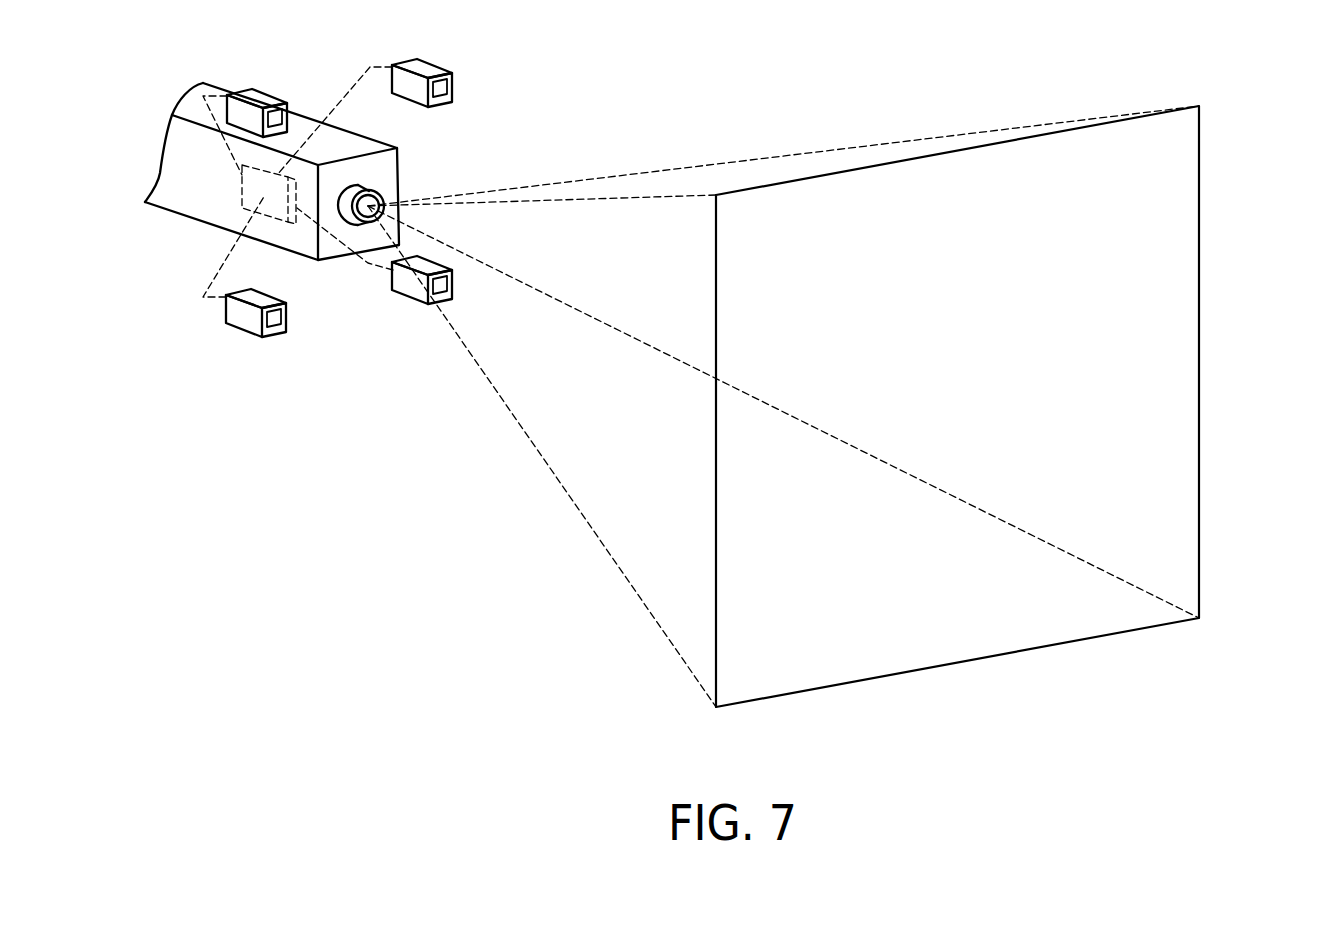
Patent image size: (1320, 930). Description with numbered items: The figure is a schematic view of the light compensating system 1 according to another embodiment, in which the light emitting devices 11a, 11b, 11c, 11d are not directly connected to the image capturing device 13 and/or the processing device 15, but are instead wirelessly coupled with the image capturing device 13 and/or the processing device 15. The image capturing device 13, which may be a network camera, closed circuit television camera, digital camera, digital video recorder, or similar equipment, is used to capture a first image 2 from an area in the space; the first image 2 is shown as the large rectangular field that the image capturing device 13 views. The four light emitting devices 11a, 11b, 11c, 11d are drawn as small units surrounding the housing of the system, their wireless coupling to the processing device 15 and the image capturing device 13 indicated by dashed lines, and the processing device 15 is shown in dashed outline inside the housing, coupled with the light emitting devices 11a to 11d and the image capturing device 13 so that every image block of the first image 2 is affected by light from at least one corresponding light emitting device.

The light compensating system 1 is at (370, 148).
The first image 2 is at (1199, 271).
The light emitting device 11a is at (277, 116).
The light emitting device 11b is at (447, 89).
The light emitting device 11c is at (276, 322).
The light emitting device 11d is at (443, 290).
The image capturing device 13 is at (371, 204).
The processing device 15 is at (265, 195).